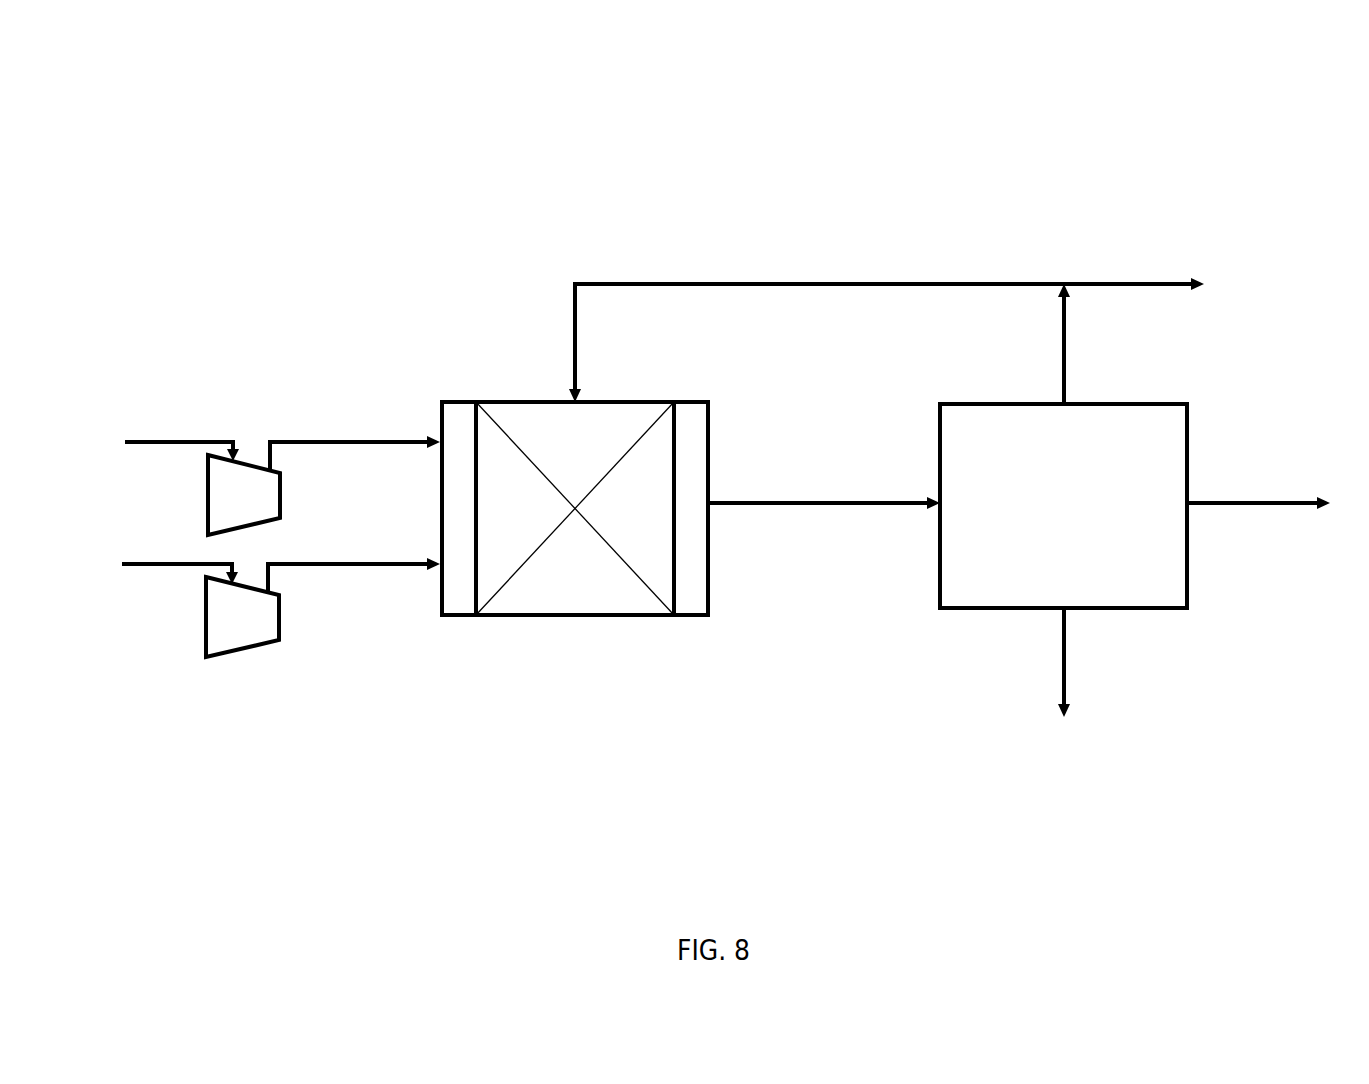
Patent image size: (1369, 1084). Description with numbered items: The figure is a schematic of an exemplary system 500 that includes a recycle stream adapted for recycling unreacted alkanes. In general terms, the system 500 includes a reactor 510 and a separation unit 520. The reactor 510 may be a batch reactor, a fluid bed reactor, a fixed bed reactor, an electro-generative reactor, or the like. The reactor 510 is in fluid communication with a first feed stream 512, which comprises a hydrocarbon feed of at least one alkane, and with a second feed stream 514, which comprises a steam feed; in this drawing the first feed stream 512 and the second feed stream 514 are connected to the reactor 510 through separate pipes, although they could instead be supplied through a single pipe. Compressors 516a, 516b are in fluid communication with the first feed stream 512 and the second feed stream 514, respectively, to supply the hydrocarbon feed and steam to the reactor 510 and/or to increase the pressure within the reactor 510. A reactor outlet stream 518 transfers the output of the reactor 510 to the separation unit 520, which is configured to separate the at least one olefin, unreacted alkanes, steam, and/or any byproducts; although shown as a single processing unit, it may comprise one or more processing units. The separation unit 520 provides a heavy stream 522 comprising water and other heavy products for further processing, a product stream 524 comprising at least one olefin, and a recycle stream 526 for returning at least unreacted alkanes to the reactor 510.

The system 500 is at (582, 108).
The reactor 510 is at (518, 392).
The first feed stream 512 is at (350, 427).
The second feed stream 514 is at (383, 578).
The compressor 516a is at (198, 496).
The compressor 516b is at (195, 618).
The reactor outlet stream 518 is at (840, 489).
The separation unit 520 is at (1202, 406).
The heavy stream 522 is at (1085, 661).
The product stream 524 is at (1265, 491).
The recycle stream 526 is at (1056, 355).